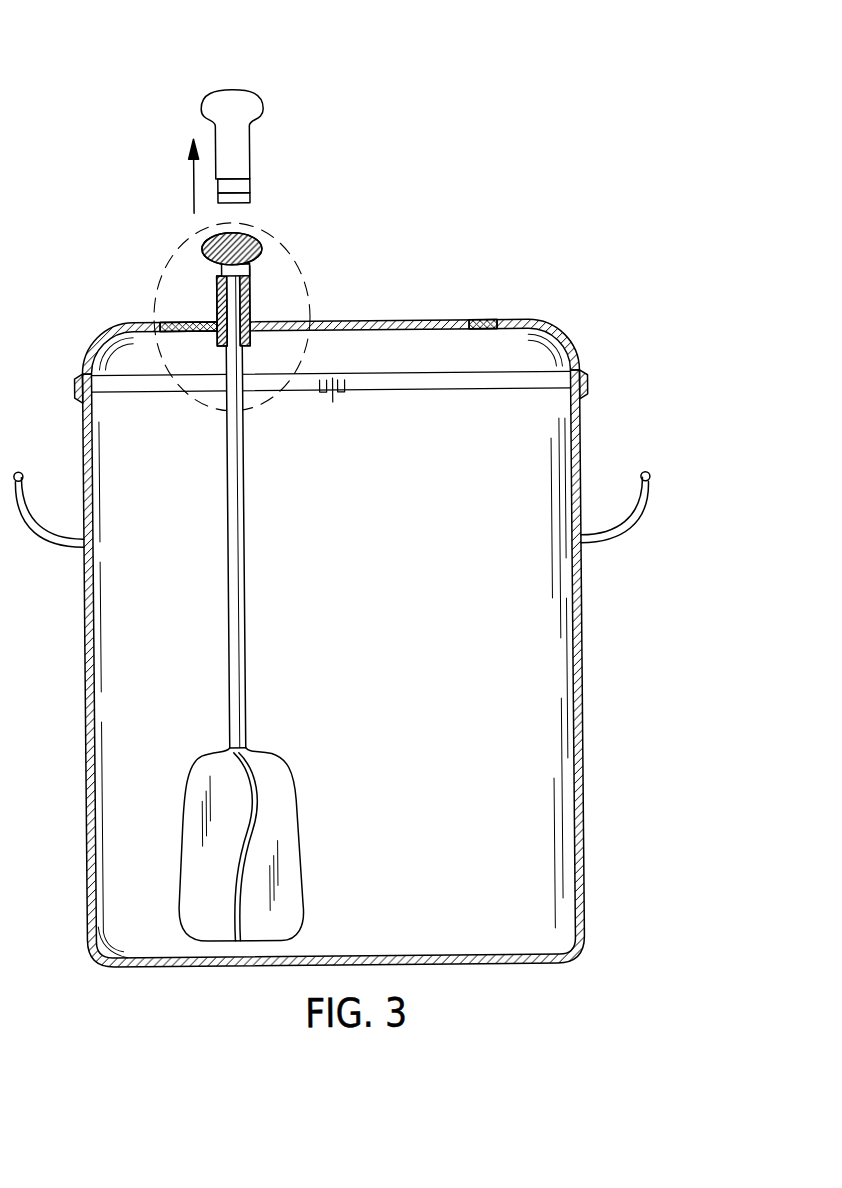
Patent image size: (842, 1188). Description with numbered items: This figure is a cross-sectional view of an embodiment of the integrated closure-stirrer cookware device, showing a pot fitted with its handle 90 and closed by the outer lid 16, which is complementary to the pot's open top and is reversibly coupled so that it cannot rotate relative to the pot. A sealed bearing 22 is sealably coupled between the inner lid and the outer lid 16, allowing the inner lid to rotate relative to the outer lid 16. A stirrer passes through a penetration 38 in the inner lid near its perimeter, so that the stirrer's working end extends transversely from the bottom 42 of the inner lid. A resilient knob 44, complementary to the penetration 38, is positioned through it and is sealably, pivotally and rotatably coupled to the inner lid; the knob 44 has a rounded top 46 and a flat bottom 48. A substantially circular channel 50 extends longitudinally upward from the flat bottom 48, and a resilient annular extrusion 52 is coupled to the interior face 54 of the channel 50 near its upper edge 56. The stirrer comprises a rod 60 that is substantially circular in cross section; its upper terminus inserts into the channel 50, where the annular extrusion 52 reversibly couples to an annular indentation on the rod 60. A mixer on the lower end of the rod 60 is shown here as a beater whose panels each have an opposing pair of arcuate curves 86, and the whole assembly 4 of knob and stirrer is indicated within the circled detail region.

The agitator assembly 4 is at (296, 252).
The outer lid 16 is at (571, 334).
The sealed bearing 22 is at (483, 318).
The penetration 38 is at (218, 318).
The bottom 42 is at (360, 336).
The knob 44 is at (255, 137).
The rounded top 46 is at (277, 112).
The flat bottom 48 is at (245, 202).
The channel 50 is at (256, 290).
The annular extrusion 52 is at (219, 270).
The interior face 54 is at (218, 290).
The upper edge 56 is at (259, 264).
The rod 60 is at (248, 597).
The arcuate curves 86 is at (232, 890).
The handle 90 is at (629, 521).